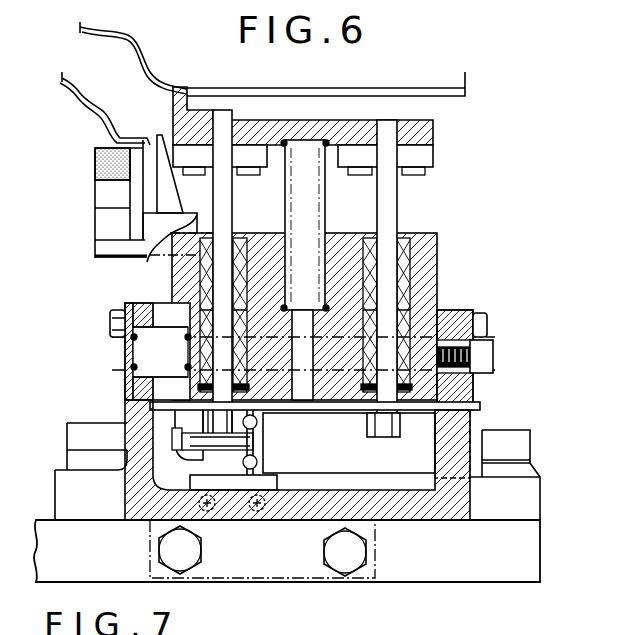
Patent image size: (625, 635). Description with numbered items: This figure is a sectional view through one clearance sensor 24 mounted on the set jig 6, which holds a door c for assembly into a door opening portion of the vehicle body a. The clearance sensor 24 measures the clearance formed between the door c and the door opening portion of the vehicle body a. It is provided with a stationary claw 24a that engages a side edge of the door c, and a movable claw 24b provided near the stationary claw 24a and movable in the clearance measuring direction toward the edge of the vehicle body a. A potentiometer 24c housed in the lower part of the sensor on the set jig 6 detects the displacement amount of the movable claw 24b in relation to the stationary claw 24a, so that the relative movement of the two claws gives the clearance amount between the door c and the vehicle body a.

The clearance sensor 24 is at (437, 214).
The stationary claw 24a is at (157, 131).
The movable claw 24b is at (182, 87).
The potentiometer 24c is at (408, 464).
The vehicle body a is at (423, 88).
The rear door c is at (98, 140).
The set jig 6 is at (490, 575).